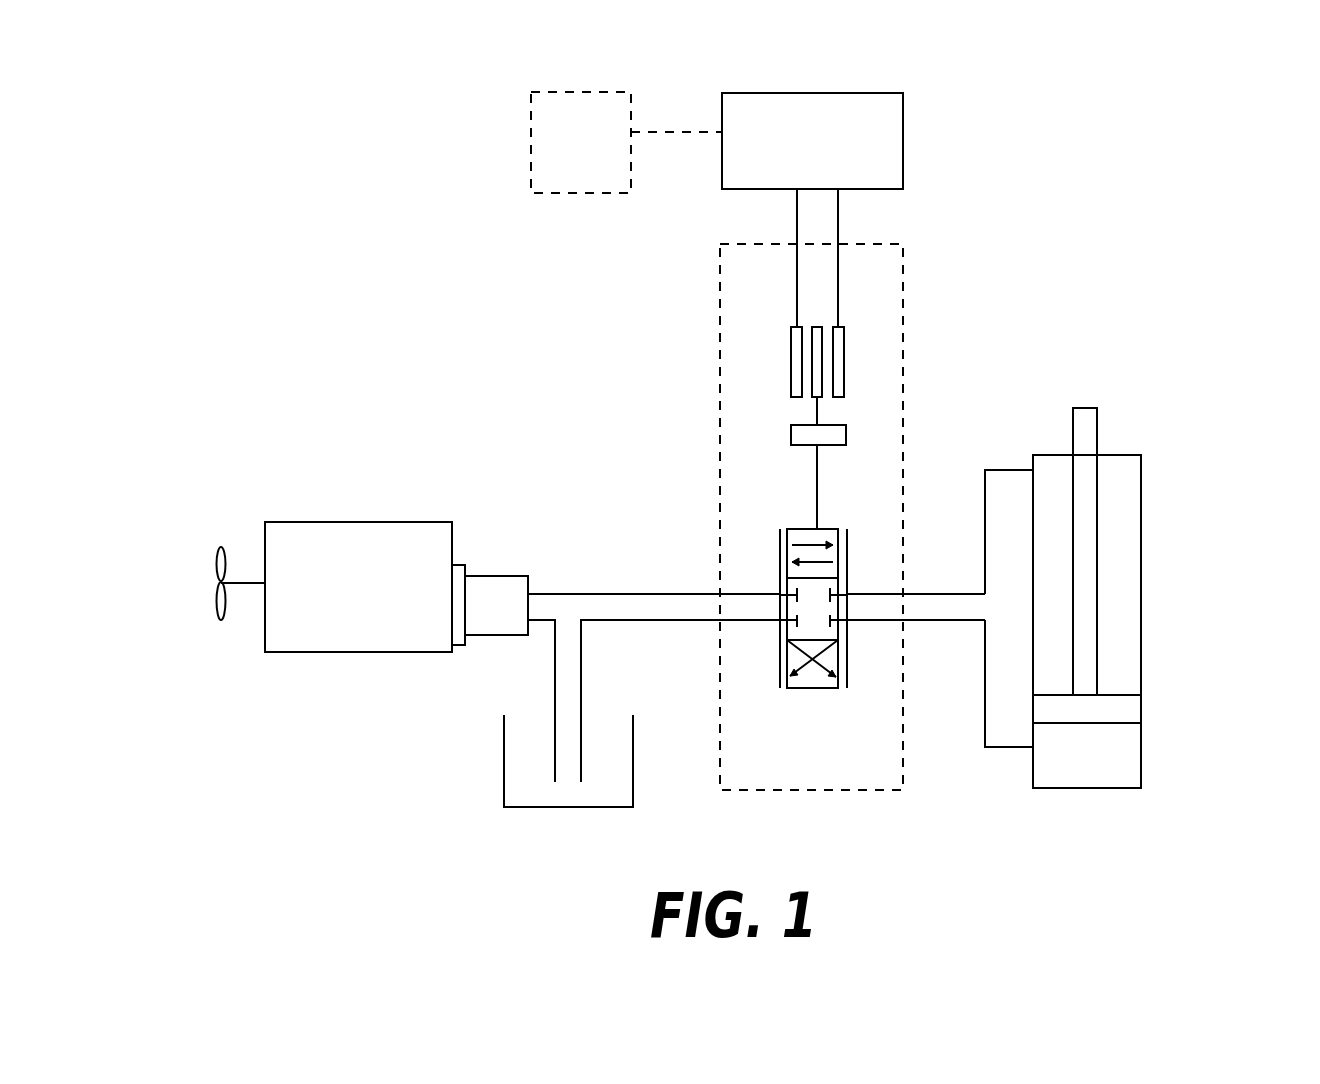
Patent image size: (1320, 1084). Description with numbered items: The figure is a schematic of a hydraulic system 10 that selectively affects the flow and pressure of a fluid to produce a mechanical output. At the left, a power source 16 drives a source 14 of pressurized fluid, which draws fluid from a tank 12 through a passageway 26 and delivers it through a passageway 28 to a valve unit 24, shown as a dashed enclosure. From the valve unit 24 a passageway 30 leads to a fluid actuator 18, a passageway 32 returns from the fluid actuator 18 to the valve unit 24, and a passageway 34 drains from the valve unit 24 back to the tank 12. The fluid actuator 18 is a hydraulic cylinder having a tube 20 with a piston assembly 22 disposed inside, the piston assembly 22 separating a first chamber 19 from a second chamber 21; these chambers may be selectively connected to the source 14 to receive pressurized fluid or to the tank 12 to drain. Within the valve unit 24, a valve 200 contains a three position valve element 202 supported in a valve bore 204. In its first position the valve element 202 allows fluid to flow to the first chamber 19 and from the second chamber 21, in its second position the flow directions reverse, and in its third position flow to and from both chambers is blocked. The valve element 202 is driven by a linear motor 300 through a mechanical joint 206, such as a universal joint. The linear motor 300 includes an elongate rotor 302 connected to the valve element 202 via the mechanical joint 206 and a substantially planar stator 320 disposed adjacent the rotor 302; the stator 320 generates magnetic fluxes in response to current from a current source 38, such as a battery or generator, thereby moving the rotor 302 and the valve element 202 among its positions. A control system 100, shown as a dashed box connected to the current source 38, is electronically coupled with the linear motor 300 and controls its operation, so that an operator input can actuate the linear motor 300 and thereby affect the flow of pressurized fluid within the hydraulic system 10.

The hydraulic system 10 is at (536, 441).
The tank 12 is at (504, 777).
The source of pressurized fluid 14 is at (495, 635).
The power source 16 is at (265, 645).
The fluid actuator 18 is at (1124, 598).
The first chamber 19 is at (1127, 486).
The tube 20 is at (1141, 653).
The second chamber 21 is at (1127, 763).
The piston assembly 22 is at (1127, 708).
The valve unit 24 is at (893, 792).
The passageway 26 is at (555, 697).
The passageway 28 is at (633, 594).
The passageway 30 is at (927, 593).
The passageway 32 is at (963, 623).
The passageway 34 is at (702, 620).
The current source 38 is at (903, 128).
The control system 100 is at (531, 125).
The valve 200 is at (815, 617).
The valve element 202 is at (813, 690).
The valve bore 204 is at (845, 678).
The mechanical joint 206 is at (846, 432).
The linear motor 300 is at (864, 360).
The rotor 302 is at (813, 396).
The stator 320 is at (844, 345).